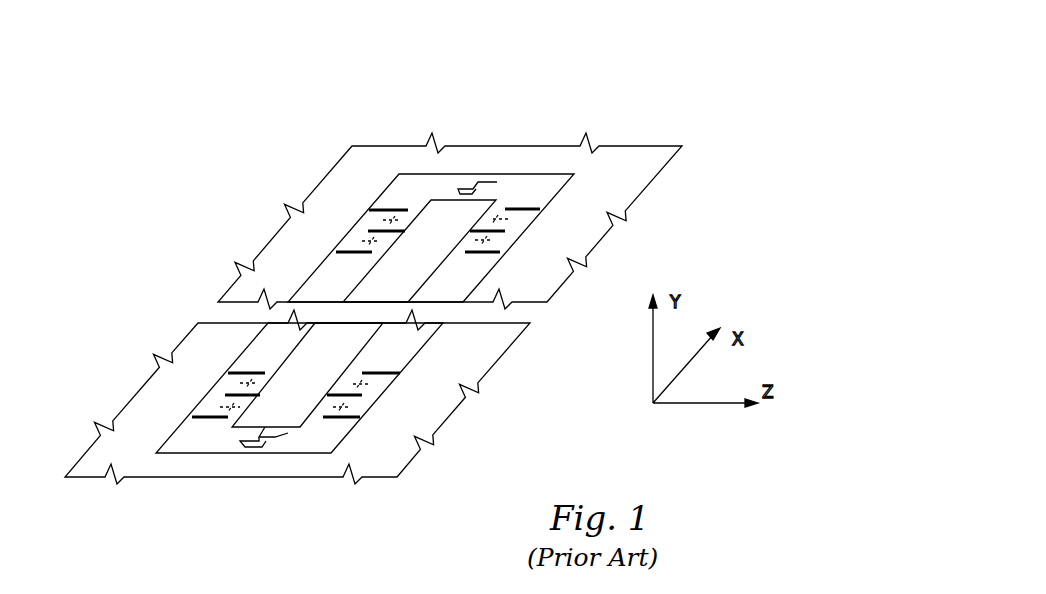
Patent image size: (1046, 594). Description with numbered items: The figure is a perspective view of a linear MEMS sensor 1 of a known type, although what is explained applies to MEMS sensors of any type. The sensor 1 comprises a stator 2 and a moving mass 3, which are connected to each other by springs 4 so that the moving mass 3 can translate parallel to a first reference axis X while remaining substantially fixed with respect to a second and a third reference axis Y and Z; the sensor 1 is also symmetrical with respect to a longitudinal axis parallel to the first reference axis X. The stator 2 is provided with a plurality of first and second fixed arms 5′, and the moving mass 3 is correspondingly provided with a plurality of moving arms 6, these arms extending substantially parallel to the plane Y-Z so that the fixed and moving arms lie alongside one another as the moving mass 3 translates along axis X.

The linear MEMS sensor 1 is at (727, 212).
The stator 2 is at (355, 166).
The moving mass 3 is at (531, 182).
The springs 4 is at (484, 175).
The first fixed arms 5′ is at (343, 252).
The moving arms 6 is at (400, 211).